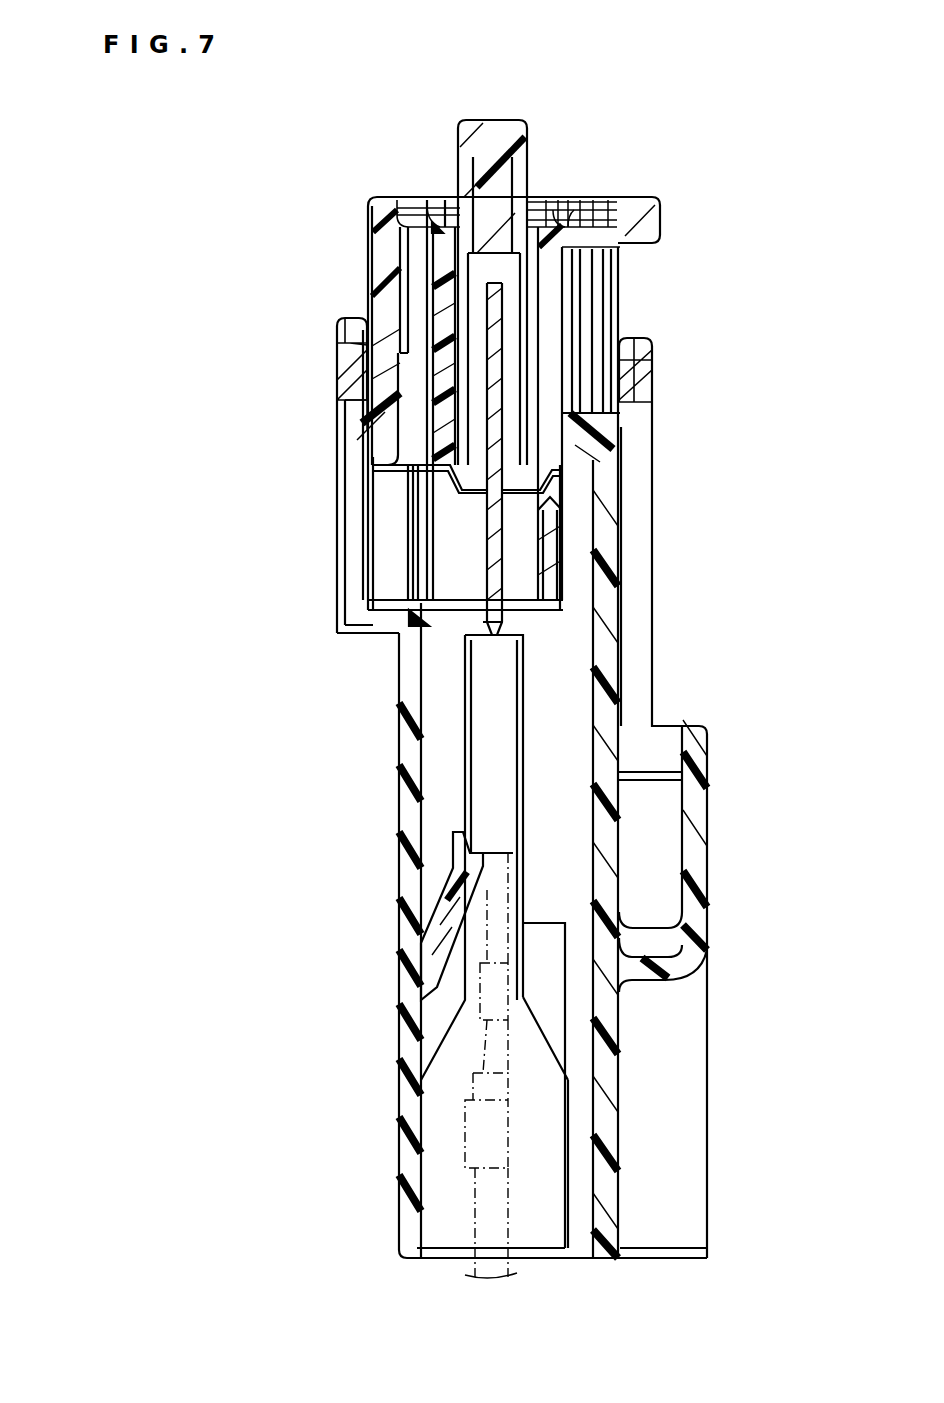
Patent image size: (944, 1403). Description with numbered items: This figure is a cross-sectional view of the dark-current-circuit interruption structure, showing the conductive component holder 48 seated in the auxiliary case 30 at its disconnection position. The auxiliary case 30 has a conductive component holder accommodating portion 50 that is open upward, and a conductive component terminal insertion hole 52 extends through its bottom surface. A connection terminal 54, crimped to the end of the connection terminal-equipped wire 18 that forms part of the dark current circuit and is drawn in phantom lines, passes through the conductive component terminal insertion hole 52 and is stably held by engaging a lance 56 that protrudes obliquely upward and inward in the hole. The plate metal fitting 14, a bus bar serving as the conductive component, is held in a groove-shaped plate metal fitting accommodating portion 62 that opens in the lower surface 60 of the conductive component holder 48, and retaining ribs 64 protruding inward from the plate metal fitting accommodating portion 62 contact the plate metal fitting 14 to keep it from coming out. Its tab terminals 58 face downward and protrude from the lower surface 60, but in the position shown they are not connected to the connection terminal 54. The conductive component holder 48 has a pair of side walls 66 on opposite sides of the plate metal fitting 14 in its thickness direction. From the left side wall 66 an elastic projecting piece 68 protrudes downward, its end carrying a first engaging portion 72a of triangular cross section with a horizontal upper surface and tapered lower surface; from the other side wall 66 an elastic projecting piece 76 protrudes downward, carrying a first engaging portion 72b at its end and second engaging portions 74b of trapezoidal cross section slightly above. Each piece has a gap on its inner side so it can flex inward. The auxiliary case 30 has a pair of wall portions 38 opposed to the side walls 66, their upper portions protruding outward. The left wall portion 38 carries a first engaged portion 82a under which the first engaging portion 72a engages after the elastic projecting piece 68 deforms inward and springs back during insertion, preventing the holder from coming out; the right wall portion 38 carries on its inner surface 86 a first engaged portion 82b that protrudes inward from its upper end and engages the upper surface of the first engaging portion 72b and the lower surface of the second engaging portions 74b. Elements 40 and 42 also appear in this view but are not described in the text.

The conductive component holder 48 is at (515, 73).
The elastic projecting piece 76 is at (512, 338).
The plate metal fitting 14 is at (500, 352).
The side wall 66 is at (382, 236).
The elastic projecting piece 68 is at (505, 340).
The conductive component holder accommodating portion 50 is at (370, 342).
The first engaged portion 82a is at (350, 385).
The first engaging portion 72a is at (365, 410).
The lower surface 60 is at (400, 468).
The tab terminals 58 is at (493, 543).
The second engaging portions 74b is at (570, 397).
The first engaged portion 82b is at (577, 423).
The first engaging portion 72b is at (580, 440).
The wall portion 38 is at (410, 870).
The flange portion 42 is at (690, 860).
The housing body 40 is at (665, 1050).
The auxiliary case 30 is at (672, 604).
The inner surface 86 is at (610, 495).
The conductive component terminal insertion hole 52 is at (425, 705).
The connection terminal 54 is at (435, 717).
The lance 56 is at (447, 905).
The connection terminal-equipped wire 18 is at (447, 1127).
The retaining ribs 64 is at (540, 328).
The plate metal fitting accommodating portion 62 is at (500, 378).